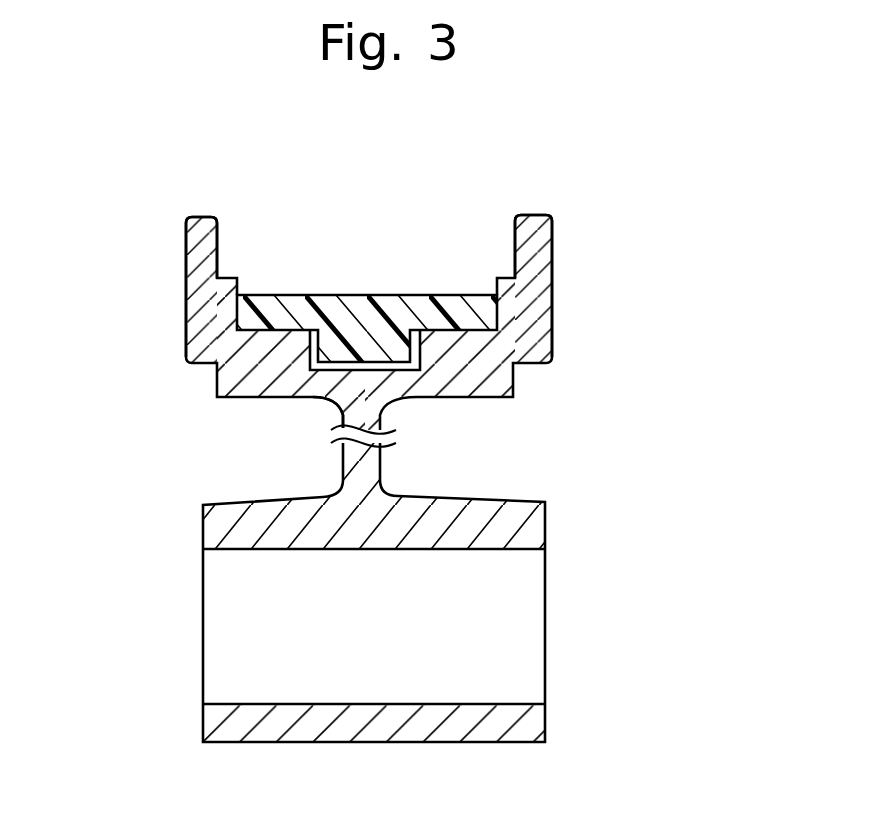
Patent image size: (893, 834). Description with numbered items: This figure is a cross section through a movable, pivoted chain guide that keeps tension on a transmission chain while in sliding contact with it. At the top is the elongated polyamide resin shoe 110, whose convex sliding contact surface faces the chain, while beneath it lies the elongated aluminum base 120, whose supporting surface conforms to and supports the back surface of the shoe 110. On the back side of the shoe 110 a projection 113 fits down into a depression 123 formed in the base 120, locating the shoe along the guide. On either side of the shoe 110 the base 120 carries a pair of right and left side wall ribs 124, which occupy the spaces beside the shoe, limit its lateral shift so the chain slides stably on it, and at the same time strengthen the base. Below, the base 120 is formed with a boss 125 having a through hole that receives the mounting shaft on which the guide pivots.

The shoe 110 is at (390, 302).
The projection 113 is at (313, 398).
The base 120 is at (667, 232).
The depression 123 is at (422, 398).
The side wall ribs 124 is at (197, 278).
The boss 125 is at (475, 523).